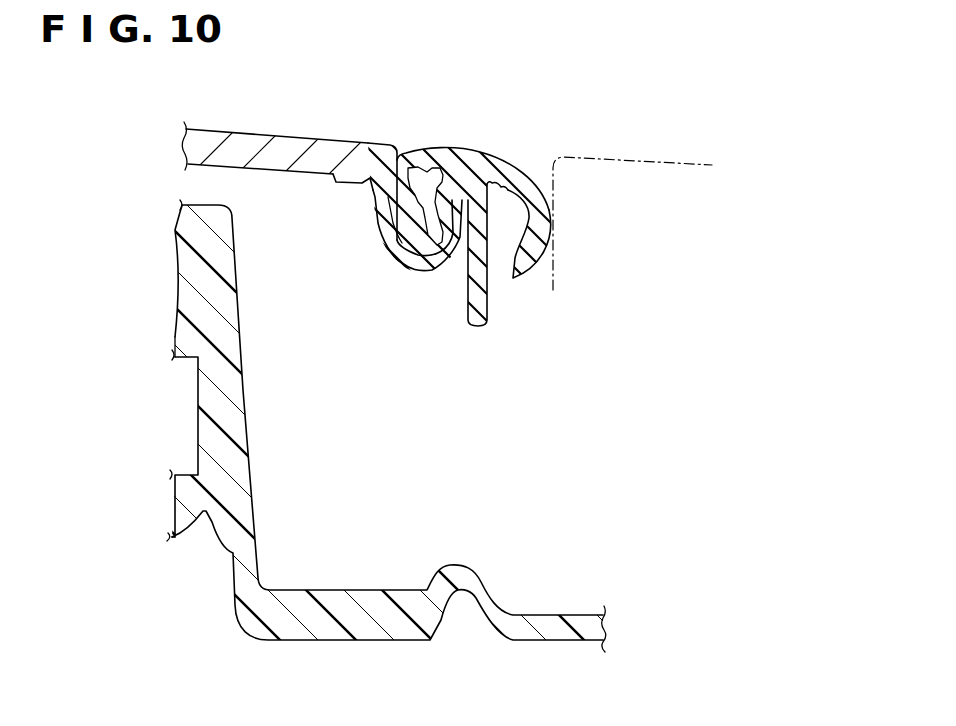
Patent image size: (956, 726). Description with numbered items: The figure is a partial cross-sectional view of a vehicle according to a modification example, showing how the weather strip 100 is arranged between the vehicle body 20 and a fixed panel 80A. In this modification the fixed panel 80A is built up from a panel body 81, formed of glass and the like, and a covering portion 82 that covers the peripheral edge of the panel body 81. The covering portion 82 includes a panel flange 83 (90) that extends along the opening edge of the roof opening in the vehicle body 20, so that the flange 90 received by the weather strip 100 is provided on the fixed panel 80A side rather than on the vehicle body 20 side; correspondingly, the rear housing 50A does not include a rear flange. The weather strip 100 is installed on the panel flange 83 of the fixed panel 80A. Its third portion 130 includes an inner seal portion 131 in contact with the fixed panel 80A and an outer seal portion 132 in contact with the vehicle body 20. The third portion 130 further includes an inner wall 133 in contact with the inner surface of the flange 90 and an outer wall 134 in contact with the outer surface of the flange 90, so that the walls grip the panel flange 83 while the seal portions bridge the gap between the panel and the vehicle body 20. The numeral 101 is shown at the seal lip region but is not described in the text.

The vehicle body 20 is at (648, 160).
The rear housing 50A is at (484, 624).
The fixed panel 80A is at (306, 206).
The panel body 81 is at (296, 131).
The covering portion 82 is at (388, 144).
The panel flange 83 is at (401, 263).
The flange 90 is at (401, 263).
The weather strip 100 is at (500, 280).
The lip 101 is at (465, 212).
The third portion 130 is at (500, 280).
The inner seal portion 131 is at (427, 153).
The outer seal portion 132 is at (520, 154).
The inner wall 133 is at (430, 267).
The outer wall 134 is at (489, 318).